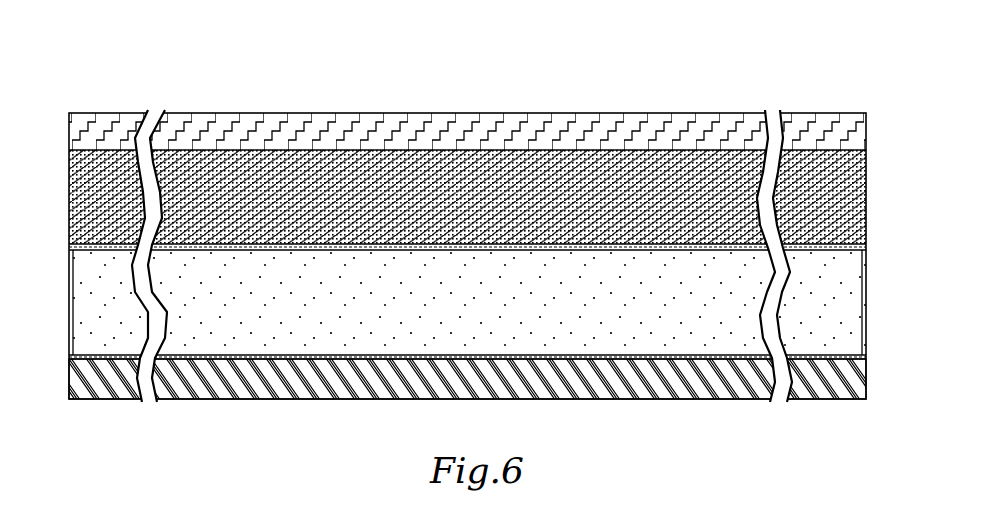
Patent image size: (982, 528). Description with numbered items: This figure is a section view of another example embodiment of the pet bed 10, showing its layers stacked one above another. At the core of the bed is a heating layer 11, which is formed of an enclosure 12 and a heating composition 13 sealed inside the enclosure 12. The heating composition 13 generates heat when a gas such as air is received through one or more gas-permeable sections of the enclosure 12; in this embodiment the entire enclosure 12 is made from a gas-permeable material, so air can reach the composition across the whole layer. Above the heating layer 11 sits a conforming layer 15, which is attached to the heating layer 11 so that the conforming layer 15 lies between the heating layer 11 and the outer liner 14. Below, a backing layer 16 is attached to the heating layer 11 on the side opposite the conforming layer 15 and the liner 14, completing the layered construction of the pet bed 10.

The pet bed 10 is at (700, 33).
The heating layer 11 is at (345, 343).
The enclosure 12 is at (467, 404).
The heating composition 13 is at (630, 340).
The liner 14 is at (585, 125).
The conforming layer 15 is at (609, 163).
The backing layer 16 is at (668, 375).